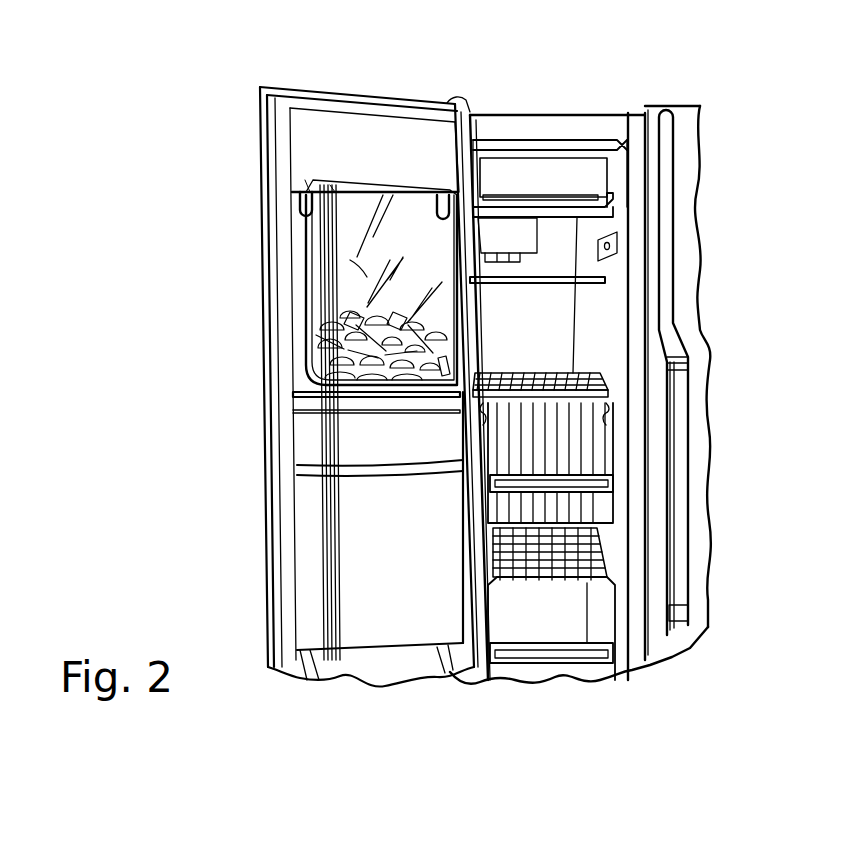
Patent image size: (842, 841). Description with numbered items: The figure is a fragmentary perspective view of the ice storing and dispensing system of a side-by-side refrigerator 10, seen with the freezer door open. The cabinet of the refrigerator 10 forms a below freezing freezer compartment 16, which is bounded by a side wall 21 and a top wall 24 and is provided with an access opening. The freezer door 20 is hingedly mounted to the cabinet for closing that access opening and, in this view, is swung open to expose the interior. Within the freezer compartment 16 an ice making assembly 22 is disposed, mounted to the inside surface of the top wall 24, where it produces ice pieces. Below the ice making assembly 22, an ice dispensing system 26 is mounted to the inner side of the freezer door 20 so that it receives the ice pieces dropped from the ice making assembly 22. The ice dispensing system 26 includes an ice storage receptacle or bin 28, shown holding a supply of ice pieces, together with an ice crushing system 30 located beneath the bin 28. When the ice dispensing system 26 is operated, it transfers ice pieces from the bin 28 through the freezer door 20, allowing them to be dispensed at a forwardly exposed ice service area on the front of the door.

The refrigerator 10 is at (641, 76).
The freezer compartment 16 is at (538, 343).
The freezer door 20 is at (277, 428).
The side wall 21 is at (608, 307).
The ice making assembly 22 is at (588, 178).
The top wall 24 is at (568, 143).
The ice dispensing system 26 is at (285, 388).
The ice storage bin 28 is at (355, 272).
The ice crushing system 30 is at (300, 463).